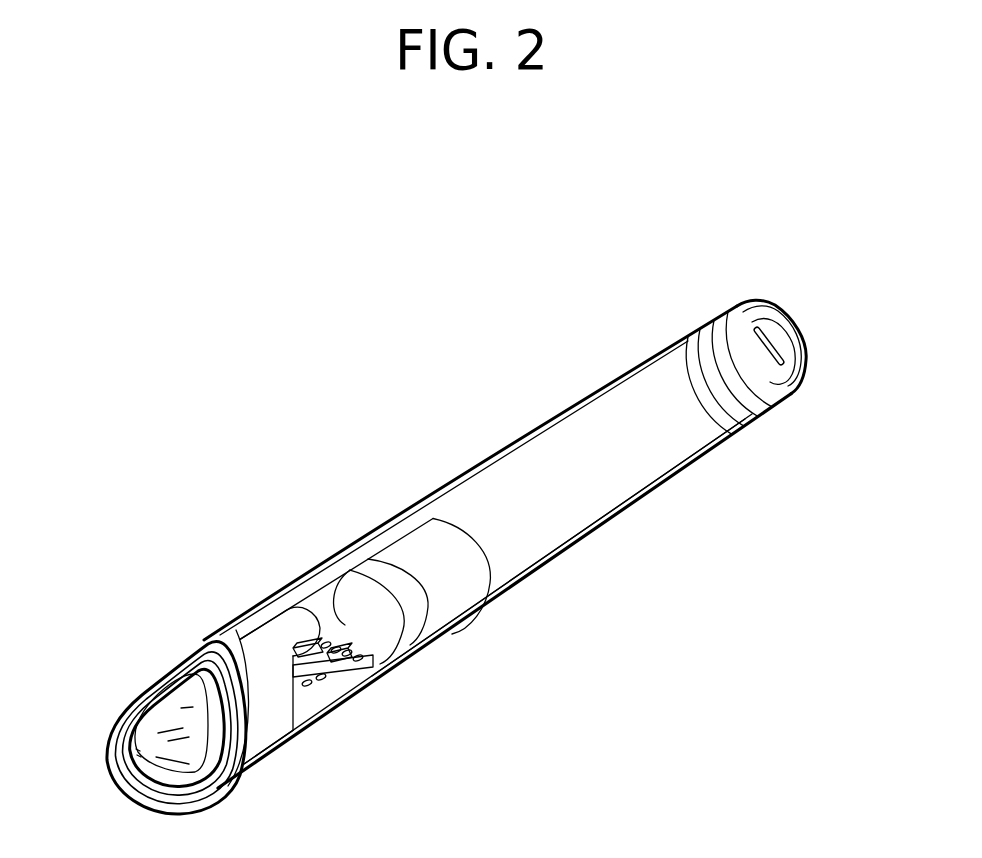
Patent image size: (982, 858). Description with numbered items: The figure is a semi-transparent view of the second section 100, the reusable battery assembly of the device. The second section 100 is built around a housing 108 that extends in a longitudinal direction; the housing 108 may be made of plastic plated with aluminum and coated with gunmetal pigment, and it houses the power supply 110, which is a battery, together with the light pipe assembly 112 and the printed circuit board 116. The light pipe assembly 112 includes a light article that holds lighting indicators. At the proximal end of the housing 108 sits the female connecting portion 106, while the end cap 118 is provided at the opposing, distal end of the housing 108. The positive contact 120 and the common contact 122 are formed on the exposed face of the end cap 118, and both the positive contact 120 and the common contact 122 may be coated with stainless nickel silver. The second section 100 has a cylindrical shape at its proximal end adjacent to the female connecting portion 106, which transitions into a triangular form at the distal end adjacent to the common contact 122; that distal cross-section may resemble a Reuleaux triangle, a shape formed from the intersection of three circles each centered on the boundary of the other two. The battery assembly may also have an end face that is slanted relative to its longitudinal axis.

The second section 100 is at (462, 180).
The female connecting portion 106 is at (767, 302).
The housing 108 is at (485, 465).
The power supply 110 is at (582, 519).
The light pipe assembly 112 is at (306, 586).
The printed circuit board 116 is at (333, 677).
The end cap 118 is at (268, 733).
The positive contact 120 is at (172, 672).
The common contact 122 is at (152, 733).